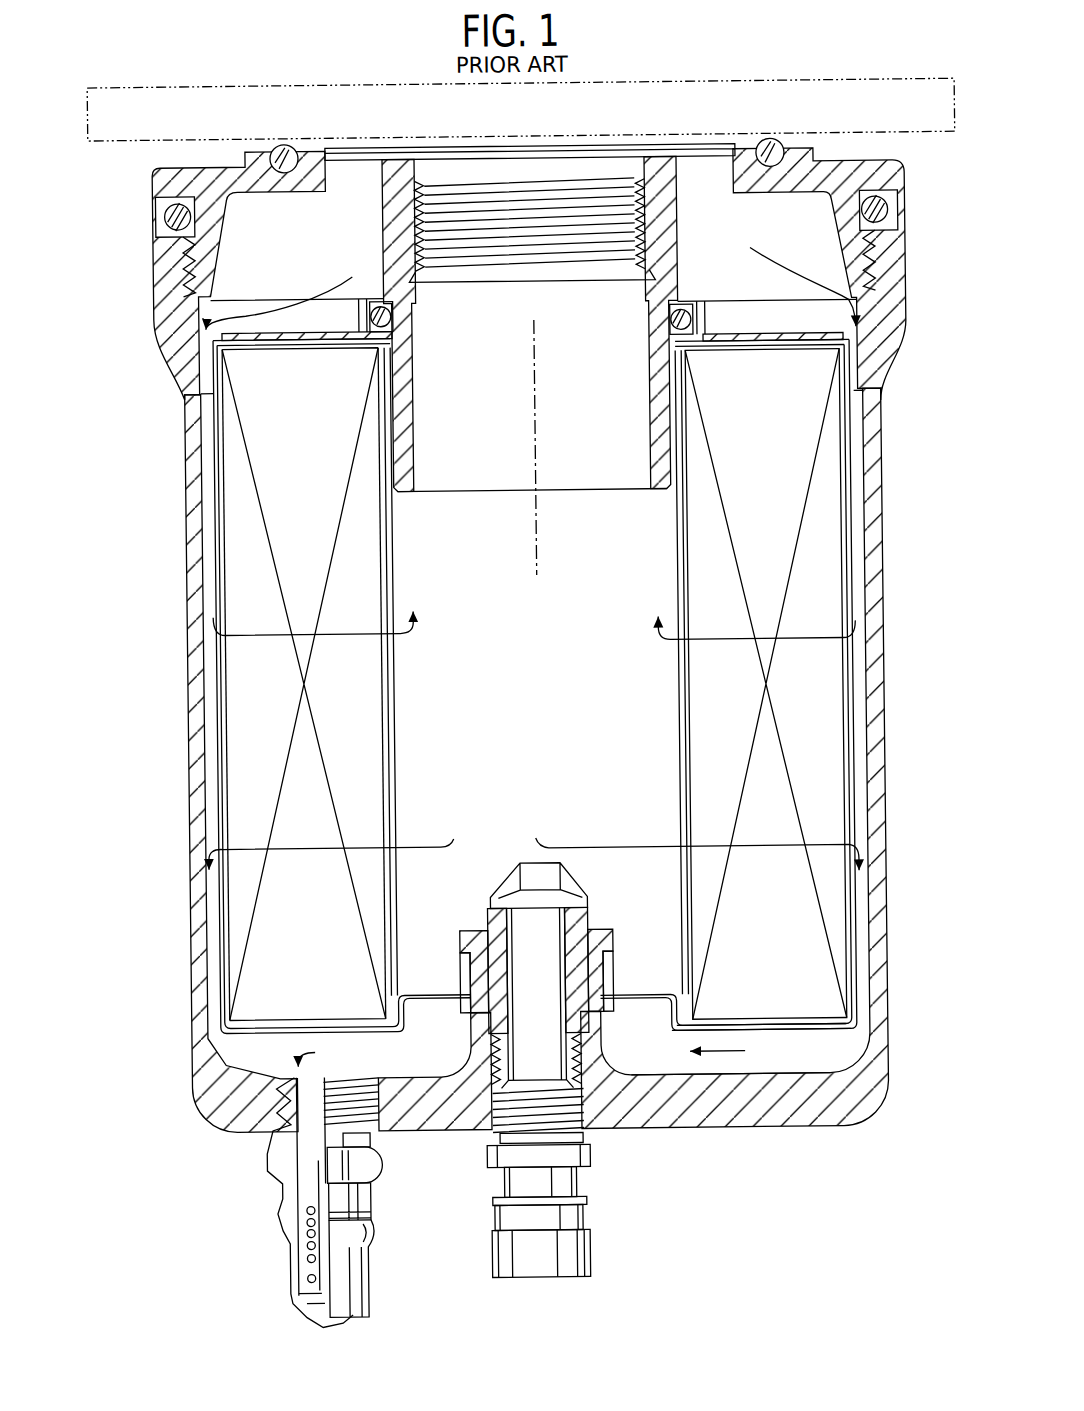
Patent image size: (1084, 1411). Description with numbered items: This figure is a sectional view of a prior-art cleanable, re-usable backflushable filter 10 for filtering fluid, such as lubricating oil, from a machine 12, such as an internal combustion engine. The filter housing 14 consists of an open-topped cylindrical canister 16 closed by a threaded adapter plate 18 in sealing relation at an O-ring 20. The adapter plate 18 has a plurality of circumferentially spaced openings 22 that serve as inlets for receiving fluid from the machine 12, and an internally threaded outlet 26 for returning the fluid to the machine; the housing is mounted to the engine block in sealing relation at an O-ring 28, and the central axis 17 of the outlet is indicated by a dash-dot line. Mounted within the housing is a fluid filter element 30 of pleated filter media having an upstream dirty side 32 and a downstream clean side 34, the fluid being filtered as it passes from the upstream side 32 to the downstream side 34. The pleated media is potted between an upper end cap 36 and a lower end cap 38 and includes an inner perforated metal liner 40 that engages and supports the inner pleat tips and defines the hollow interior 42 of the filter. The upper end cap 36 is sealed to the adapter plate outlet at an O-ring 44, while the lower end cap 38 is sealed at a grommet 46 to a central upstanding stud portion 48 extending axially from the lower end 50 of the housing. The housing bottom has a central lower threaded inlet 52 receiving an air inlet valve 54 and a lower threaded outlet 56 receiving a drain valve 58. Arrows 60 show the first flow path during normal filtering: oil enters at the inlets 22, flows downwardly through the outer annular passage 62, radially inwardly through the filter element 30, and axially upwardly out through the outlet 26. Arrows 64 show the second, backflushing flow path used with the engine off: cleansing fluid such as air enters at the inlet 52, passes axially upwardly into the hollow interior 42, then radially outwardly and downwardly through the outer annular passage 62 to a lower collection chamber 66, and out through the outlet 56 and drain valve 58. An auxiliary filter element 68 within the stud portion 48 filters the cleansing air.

The filter 10 is at (504, 706).
The machine 12 is at (149, 81).
The filter housing 14 is at (498, 764).
The open-topped cylindrical canister 16 is at (184, 485).
The central axis 17 is at (549, 438).
The threaded adapter plate 18 is at (502, 249).
The O-ring 20 is at (176, 224).
The circumferentially spaced openings 22 is at (347, 190).
The outlet 26 is at (436, 224).
The O-ring 28 is at (291, 143).
The fluid filter element 30 is at (521, 703).
The upstream dirty side 32 is at (227, 811).
The downstream clean side 34 is at (379, 811).
The upper end cap 36 is at (740, 334).
The lower end cap 38 is at (753, 1039).
The inner perforated metal liner 40 is at (391, 770).
The hollow interior 42 is at (533, 531).
The O-ring 44 is at (688, 306).
The grommet 46 is at (608, 978).
The central upstanding stud portion 48 is at (550, 1068).
The lower end 50 is at (687, 1107).
The central lower threaded inlet 52 is at (554, 1137).
The air inlet valve 54 is at (572, 1187).
The lower threaded outlet 56 is at (378, 1161).
The drain valve 58 is at (362, 1266).
The first flow path arrows 60 is at (231, 304).
The outer annular passage 62 is at (210, 584).
The second flow path arrows 64 is at (443, 859).
The lower collection chamber 66 is at (734, 1071).
The auxiliary filter element 68 is at (544, 933).